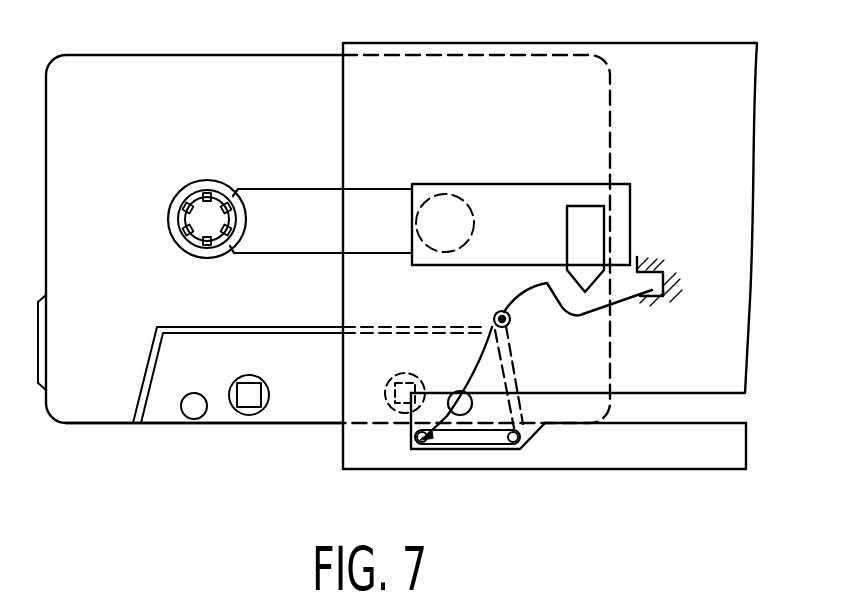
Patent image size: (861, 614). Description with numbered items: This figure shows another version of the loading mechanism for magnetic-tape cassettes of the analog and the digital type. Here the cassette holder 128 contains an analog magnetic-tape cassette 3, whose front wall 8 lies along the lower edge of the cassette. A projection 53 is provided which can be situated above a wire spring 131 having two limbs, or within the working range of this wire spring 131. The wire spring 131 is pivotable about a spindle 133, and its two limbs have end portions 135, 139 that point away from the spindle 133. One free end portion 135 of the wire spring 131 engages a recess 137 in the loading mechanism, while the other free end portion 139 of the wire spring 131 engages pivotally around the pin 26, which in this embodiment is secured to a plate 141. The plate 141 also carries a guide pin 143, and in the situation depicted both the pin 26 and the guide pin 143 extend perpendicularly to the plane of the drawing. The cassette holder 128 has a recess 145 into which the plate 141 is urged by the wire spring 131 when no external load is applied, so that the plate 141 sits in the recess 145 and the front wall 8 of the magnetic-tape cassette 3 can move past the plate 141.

The magnetic-tape cassette 3 is at (200, 68).
The front wall 8 is at (98, 424).
The pin 26 is at (423, 443).
The projection 53 is at (584, 222).
The cassette holder 128 is at (462, 48).
The wire spring 131 is at (573, 316).
The spindle 133 is at (495, 312).
The free end portion 135 is at (622, 302).
The recess 137 is at (655, 262).
The free end portion 139 is at (420, 418).
The plate 141 is at (474, 446).
The guide pin 143 is at (513, 444).
The recess 145 is at (527, 428).